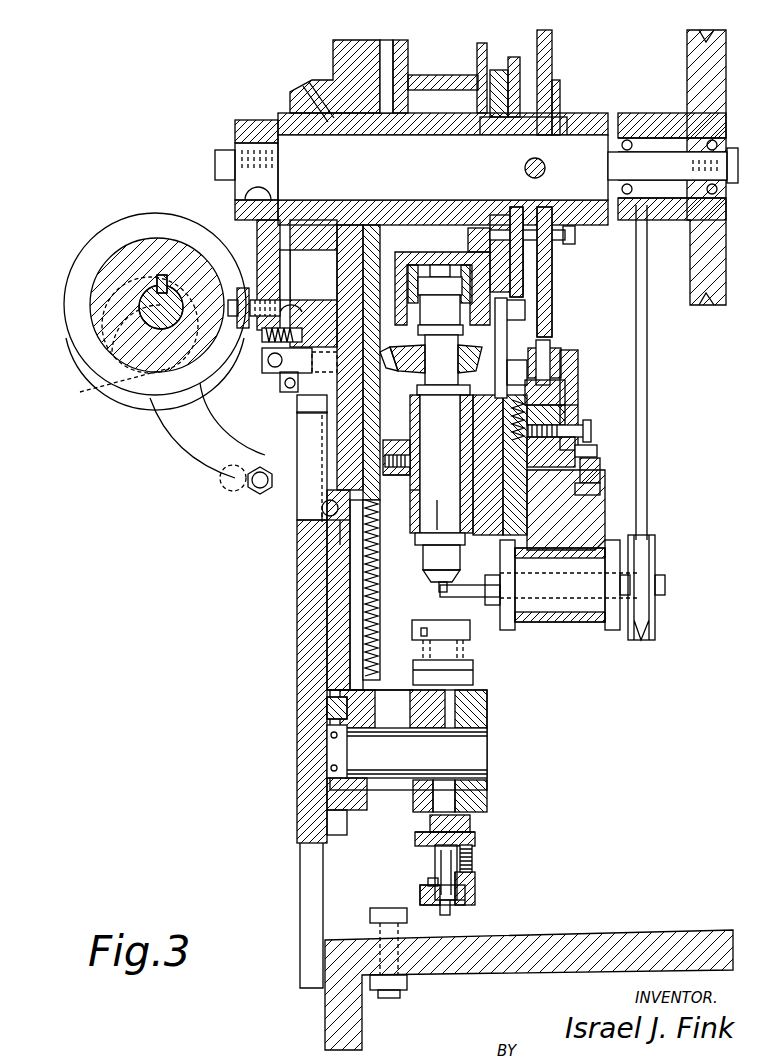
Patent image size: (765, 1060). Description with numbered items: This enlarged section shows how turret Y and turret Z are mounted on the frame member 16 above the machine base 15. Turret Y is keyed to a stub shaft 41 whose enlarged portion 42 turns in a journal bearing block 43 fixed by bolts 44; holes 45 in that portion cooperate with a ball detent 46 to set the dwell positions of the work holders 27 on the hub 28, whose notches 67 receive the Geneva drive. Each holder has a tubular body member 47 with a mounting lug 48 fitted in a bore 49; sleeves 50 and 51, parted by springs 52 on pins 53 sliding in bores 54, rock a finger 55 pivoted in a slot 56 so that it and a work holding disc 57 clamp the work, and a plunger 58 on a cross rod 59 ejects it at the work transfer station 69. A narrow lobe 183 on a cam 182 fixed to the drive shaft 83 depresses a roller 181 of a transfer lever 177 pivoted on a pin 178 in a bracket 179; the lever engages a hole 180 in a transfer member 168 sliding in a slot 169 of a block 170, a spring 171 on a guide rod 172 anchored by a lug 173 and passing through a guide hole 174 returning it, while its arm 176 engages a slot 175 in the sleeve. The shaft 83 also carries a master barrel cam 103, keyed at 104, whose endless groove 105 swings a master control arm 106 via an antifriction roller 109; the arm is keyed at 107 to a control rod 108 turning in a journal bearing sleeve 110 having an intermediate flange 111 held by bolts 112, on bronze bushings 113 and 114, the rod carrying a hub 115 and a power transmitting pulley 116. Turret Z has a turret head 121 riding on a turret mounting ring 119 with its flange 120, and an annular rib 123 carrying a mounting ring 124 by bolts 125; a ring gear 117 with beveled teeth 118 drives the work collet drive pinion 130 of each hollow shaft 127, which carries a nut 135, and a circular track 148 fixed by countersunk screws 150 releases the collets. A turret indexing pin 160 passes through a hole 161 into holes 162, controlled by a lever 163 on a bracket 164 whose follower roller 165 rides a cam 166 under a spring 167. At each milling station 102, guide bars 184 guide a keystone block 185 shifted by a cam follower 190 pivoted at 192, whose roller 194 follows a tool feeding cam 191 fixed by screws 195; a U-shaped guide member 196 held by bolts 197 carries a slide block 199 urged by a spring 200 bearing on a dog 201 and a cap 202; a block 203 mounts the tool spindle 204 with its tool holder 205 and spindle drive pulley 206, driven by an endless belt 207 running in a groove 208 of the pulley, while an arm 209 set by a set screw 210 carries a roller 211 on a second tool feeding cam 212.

The machine base 15 is at (712, 942).
The frame member 16 is at (300, 830).
The work holders 27 is at (475, 670).
The hub 28 is at (490, 724).
The stub shaft 41 is at (470, 751).
The enlarged bearing portion 42 is at (330, 756).
The journal bearing block 43 is at (330, 800).
The bolts 44 is at (346, 826).
The holes 45 is at (330, 736).
The spring urged ball detent 46 is at (330, 707).
The tubular body member 47 is at (477, 878).
The mounting lug 48 is at (456, 806).
The bore 49 is at (432, 800).
The sleeve 50 is at (472, 681).
The sleeve 51 is at (413, 630).
The springs 52 is at (470, 653).
The pins 53 is at (423, 654).
The bores 54 is at (424, 628).
The finger 55 is at (444, 906).
The slot 56 is at (420, 893).
The work holding disc 57 is at (460, 899).
The plunger 58 is at (434, 861).
The cross rod 59 is at (470, 836).
The notches 67 is at (490, 702).
The work transfer station 69 is at (497, 736).
The drive shaft 83 is at (142, 312).
The milling stations 102 is at (662, 511).
The master barrel cam 103 is at (112, 228).
The key 104 is at (163, 276).
The endless groove 105 is at (90, 270).
The master control arm 106 is at (278, 266).
The key 107 is at (245, 195).
The control rod 108 is at (398, 172).
The antifriction roller 109 is at (243, 290).
The journal bearing sleeve 110 is at (440, 82).
The intermediate flange 111 is at (386, 85).
The bolts 112 is at (400, 240).
The bronze bushing 113 is at (296, 110).
The bronze bushing 114 is at (482, 72).
The hub 115 is at (556, 126).
The power transmitting pulley 116 is at (688, 66).
The work indexing ring gear 117 is at (355, 230).
The beveled teeth 118 is at (406, 348).
The turret mounting ring 119 is at (418, 426).
The radially extending flange 120 is at (412, 448).
The turret head 121 is at (414, 533).
The annular rib 123 is at (417, 497).
The mounting ring 124 is at (412, 461).
The bolts 125 is at (412, 471).
The hollow shaft 127 is at (437, 517).
The work collet drive pinion 130 is at (520, 354).
The nut 135 is at (434, 560).
The circular track 148 is at (487, 200).
The countersunk screws 150 is at (498, 82).
The turret indexing pin 160 is at (300, 410).
The hole 161 is at (326, 372).
The holes 162 is at (300, 433).
The indexing pin pulling lever 163 is at (283, 386).
The bracket 164 is at (278, 373).
The follower roller 165 is at (284, 305).
The cam 166 is at (136, 408).
The spring 167 is at (298, 333).
The transfer member 168 is at (336, 620).
The slot 169 is at (322, 508).
The block 170 is at (340, 540).
The spring 171 is at (370, 640).
The guide rod 172 is at (358, 590).
The lug 173 is at (330, 527).
The guide hole 174 is at (330, 690).
The slot 175 is at (410, 715).
The arm 176 is at (412, 688).
The transfer lever 177 is at (190, 448).
The pin 178 is at (222, 488).
The bracket 179 is at (250, 492).
The hole 180 is at (322, 520).
The roller 181 is at (82, 391).
The cam 182 is at (130, 338).
The narrow lobe 183 is at (150, 240).
The guide bars 184 is at (413, 403).
The keystone block 185 is at (592, 454).
The cam follower 190 is at (512, 346).
The tool feeding cam 191 is at (525, 277).
The pivot 192 is at (566, 392).
The roller 194 is at (527, 310).
The screws 195 is at (575, 237).
The U-shaped guide member 196 is at (580, 418).
The bolts 197 is at (593, 491).
The slide block 199 is at (560, 530).
The spring 200 is at (572, 405).
The dog 201 is at (562, 447).
The cap 202 is at (525, 402).
The block 203 is at (593, 470).
The tool spindle 204 is at (576, 612).
The tool holder 205 is at (500, 580).
The spindle drive pulley 206 is at (658, 620).
The endless belt 207 is at (650, 340).
The groove 208 is at (640, 118).
The arm 209 is at (580, 376).
The set screw 210 is at (590, 431).
The roller 211 is at (562, 361).
The second tool feeding cam 212 is at (553, 295).
The turret Y is at (495, 776).
The turret Z is at (568, 50).